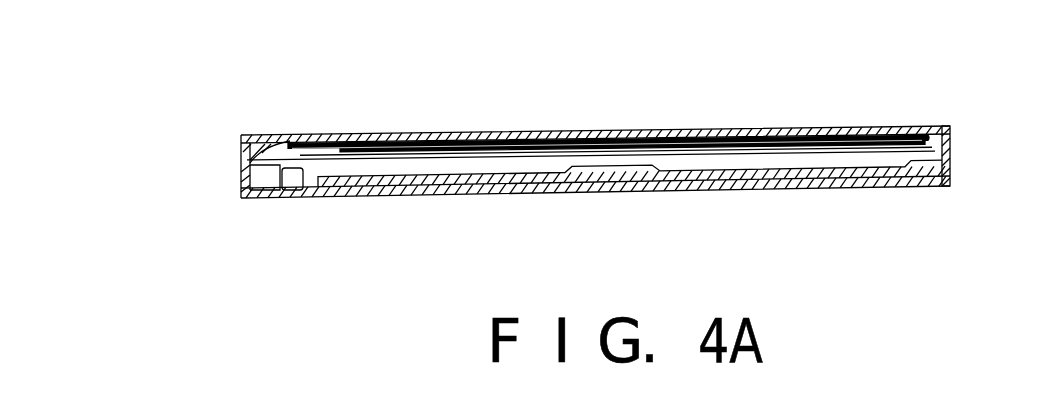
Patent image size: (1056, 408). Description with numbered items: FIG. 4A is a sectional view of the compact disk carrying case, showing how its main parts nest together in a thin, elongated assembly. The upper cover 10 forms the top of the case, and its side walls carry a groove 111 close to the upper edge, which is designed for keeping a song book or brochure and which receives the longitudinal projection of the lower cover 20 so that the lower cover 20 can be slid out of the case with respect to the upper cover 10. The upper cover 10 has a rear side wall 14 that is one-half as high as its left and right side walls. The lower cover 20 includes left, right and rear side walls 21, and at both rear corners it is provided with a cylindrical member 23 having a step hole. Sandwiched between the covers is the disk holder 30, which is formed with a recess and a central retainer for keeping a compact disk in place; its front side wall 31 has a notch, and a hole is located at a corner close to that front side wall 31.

The upper cover 10 is at (603, 128).
The rear side wall 14 is at (241, 139).
The lower cover 20 is at (660, 188).
The side walls 21 is at (241, 183).
The cylindrical member 23 is at (290, 181).
The disk holder 30 is at (812, 158).
The front side wall 31 is at (950, 138).
The groove 111 is at (415, 150).